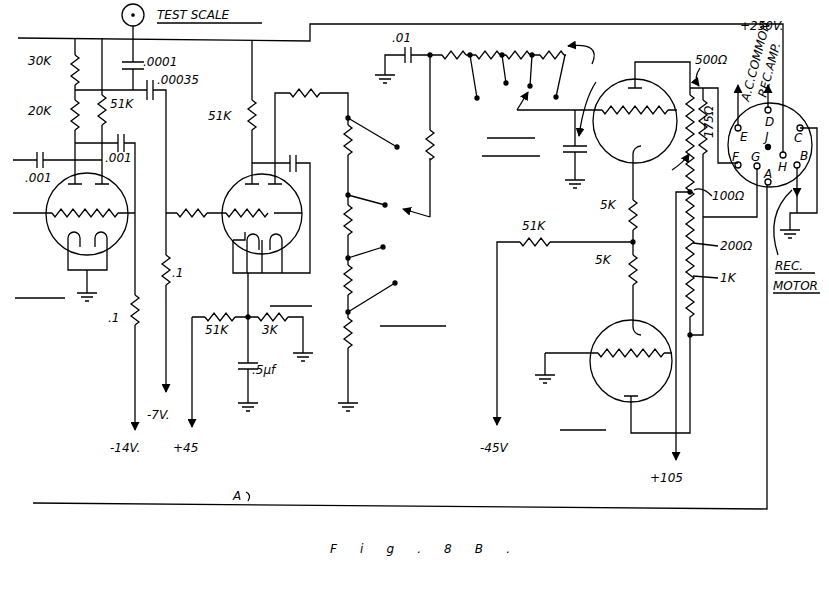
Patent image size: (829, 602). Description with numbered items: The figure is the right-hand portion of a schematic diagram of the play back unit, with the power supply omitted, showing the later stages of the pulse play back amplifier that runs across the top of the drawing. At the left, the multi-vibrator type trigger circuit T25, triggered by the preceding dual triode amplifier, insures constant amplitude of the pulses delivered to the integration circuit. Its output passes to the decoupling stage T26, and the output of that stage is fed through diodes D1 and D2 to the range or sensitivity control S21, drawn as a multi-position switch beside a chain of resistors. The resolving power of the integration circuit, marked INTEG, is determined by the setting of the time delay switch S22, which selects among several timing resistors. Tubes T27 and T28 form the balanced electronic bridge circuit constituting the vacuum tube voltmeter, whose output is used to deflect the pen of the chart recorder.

The multi-vibrator type trigger circuit T25 is at (74, 232).
The decoupling stage T26 is at (257, 195).
The balanced electronic bridge circuit tube T27 is at (629, 122).
The balanced electronic bridge circuit tube T28 is at (612, 359).
The range or sensitivity control S21 is at (389, 232).
The time delay switch S22 is at (512, 106).
The diode D1 is at (282, 240).
The diode D2 is at (231, 247).